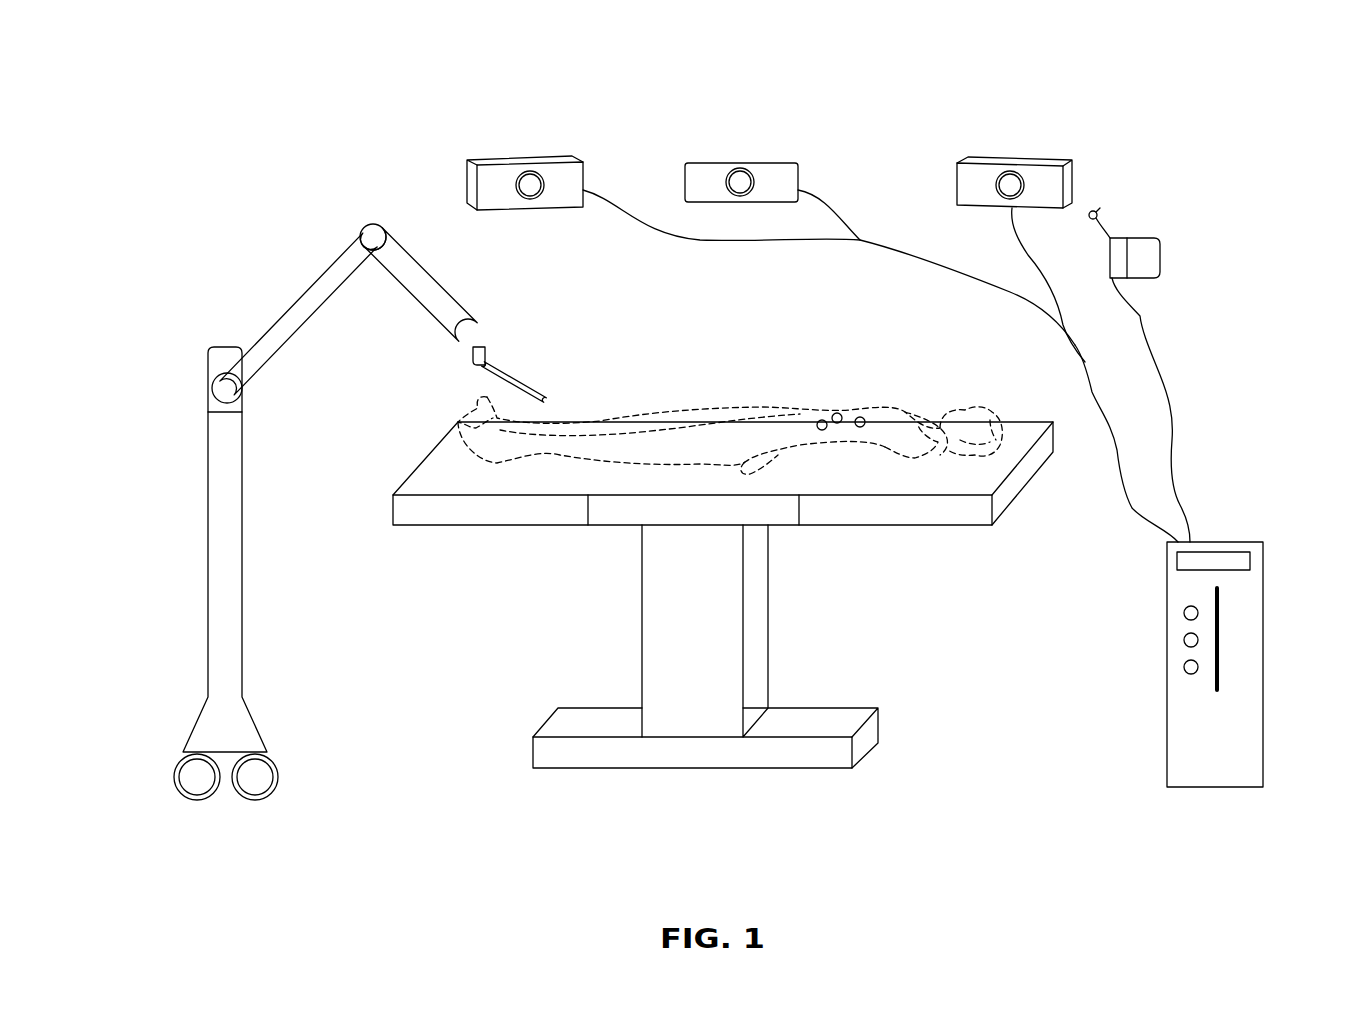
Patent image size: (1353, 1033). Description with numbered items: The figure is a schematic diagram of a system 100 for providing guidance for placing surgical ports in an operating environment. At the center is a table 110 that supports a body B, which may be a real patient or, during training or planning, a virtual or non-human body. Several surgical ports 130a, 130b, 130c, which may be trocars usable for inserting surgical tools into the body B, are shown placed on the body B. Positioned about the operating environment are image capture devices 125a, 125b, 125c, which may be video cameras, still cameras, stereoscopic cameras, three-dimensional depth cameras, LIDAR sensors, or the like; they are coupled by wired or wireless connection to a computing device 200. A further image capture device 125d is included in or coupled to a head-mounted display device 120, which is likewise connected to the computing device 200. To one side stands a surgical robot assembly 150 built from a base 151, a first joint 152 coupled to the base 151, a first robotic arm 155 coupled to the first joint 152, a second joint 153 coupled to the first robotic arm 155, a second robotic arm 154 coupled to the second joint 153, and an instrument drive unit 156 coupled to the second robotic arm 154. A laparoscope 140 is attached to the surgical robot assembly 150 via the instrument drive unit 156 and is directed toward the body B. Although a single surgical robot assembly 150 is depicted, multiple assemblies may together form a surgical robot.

The system 100 is at (945, 73).
The table 110 is at (848, 528).
The head-mounted display device (HMD) 120 is at (1157, 236).
The image capture device 125a is at (520, 160).
The image capture device 125b is at (702, 162).
The image capture device 125c is at (1028, 160).
The image capture device 125d is at (1100, 208).
The surgical port 130a is at (819, 420).
The surgical port 130b is at (837, 413).
The surgical port 130c is at (862, 417).
The laparoscope 140 is at (535, 392).
The surgical robot assembly 150 is at (225, 345).
The base 151 is at (208, 612).
The first joint 152 is at (208, 388).
The second joint 153 is at (368, 224).
The second robotic arm 154 is at (447, 278).
The first robotic arm 155 is at (312, 275).
The instrument drive unit 156 is at (487, 355).
The computing device 200 is at (1240, 541).
The body B is at (898, 410).